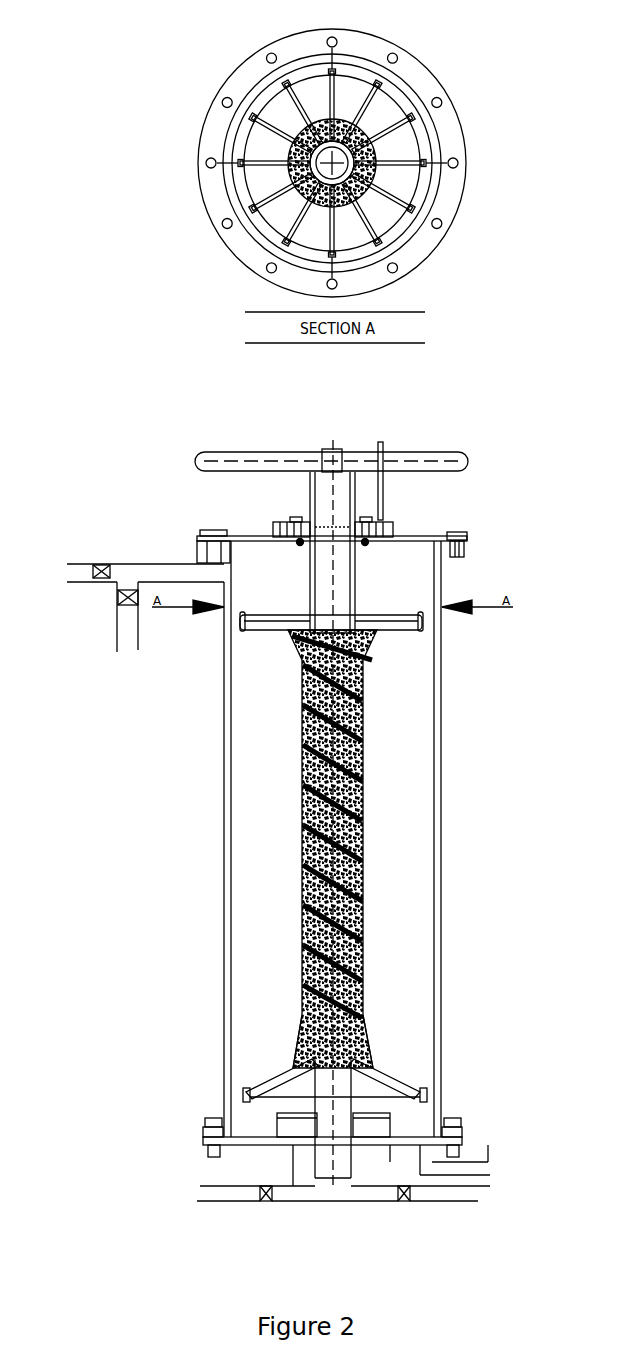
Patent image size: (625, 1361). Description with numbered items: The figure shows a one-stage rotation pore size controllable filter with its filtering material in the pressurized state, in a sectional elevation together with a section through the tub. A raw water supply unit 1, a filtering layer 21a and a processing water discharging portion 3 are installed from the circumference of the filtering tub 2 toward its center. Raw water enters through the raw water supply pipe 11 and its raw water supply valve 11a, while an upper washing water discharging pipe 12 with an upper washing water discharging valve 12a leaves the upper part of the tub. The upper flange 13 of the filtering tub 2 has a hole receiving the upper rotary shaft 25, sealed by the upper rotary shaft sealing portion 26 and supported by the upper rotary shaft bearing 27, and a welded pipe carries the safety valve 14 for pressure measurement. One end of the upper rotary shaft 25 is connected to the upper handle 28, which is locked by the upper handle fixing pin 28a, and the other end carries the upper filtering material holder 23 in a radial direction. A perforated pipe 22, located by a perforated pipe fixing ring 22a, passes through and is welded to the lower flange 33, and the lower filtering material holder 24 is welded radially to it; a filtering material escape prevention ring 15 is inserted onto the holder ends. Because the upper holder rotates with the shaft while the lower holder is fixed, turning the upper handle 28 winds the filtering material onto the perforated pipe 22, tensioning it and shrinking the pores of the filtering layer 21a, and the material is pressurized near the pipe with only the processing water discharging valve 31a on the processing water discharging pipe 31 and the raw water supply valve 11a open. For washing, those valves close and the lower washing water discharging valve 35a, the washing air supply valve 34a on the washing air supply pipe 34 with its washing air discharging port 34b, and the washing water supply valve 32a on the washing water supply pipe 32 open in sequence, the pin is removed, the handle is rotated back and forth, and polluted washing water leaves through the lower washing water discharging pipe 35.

The raw water supply unit 1 is at (197, 544).
The filtering tub 2 is at (333, 583).
The processing water discharging portion 3 is at (332, 1179).
The raw water supply pipe 11 is at (102, 627).
The raw water supply valve 11a is at (106, 612).
The upper washing water discharging pipe 12 is at (123, 588).
The upper washing water discharging valve 12a is at (76, 557).
The upper flange 13 is at (466, 526).
The safety valve 14 is at (332, 515).
The filtering material escape prevention ring 15 is at (355, 567).
The filtering layer 21a is at (389, 555).
The perforated pipe 22 is at (248, 568).
The perforated pipe fixing ring 22a is at (246, 593).
The upper filtering material holder 23 is at (371, 347).
The lower filtering material holder 24 is at (386, 1043).
The upper rotary shaft 25 is at (287, 600).
The upper rotary shaft sealing portion 26 is at (393, 517).
The upper rotary shaft bearing 27 is at (287, 517).
The upper handle 28 is at (331, 442).
The upper handle fixing pin 28a is at (411, 464).
The processing water discharging pipe 31 is at (455, 1201).
The processing water discharging valve 31a is at (410, 1200).
The washing water supply pipe 32 is at (227, 1175).
The washing water supply valve 32a is at (335, 1220).
The lower flange 33 is at (501, 1118).
The washing air supply pipe 34 is at (230, 1206).
The washing air supply valve 34a is at (272, 1149).
The washing air discharging port 34b is at (293, 1078).
The lower washing water discharging pipe 35 is at (491, 1151).
The lower washing water discharging valve 35a is at (420, 1150).